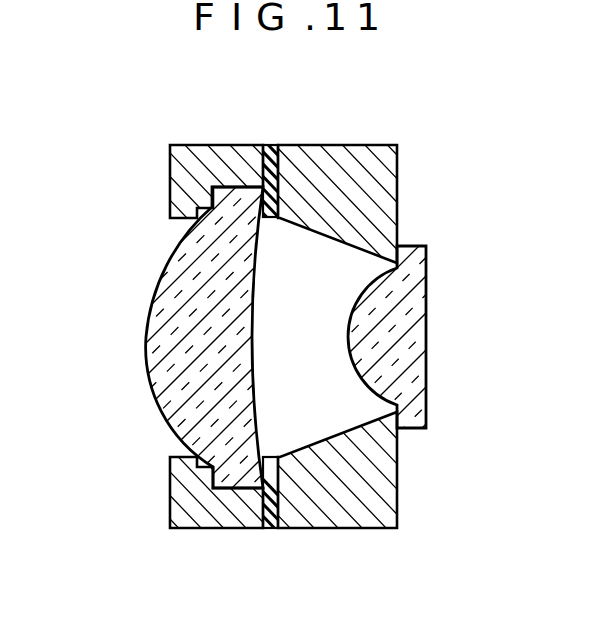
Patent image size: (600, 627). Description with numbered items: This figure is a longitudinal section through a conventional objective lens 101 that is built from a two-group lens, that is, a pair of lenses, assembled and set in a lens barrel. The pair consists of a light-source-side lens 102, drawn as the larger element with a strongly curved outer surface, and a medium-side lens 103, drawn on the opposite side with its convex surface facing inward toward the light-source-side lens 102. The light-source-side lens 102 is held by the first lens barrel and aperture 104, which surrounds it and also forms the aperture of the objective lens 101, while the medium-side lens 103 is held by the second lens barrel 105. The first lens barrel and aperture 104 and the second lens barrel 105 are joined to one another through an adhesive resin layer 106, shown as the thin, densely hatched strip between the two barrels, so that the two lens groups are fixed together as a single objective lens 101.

The objective lens 101 is at (352, 135).
The light-source-side lens 102 is at (286, 337).
The medium-side lens 103 is at (427, 313).
The first lens barrel and aperture 104 is at (205, 532).
The second lens barrel 105 is at (378, 532).
The adhesive resin layer 106 is at (268, 532).